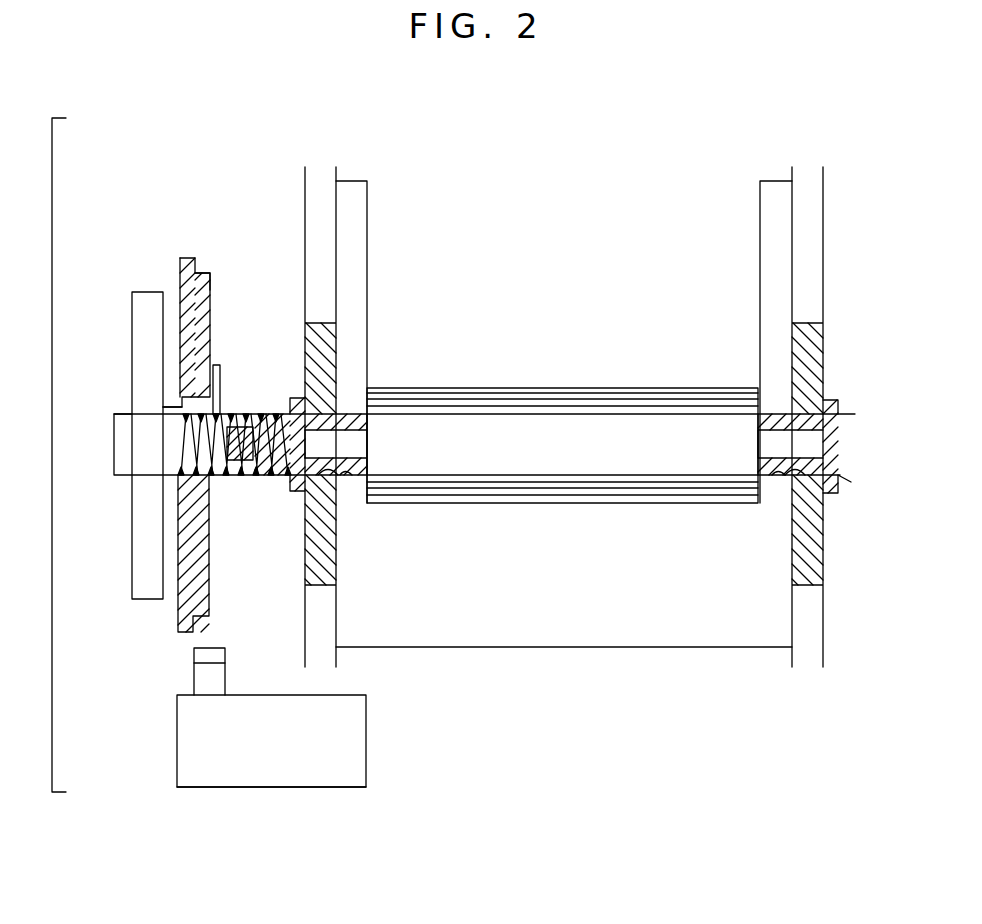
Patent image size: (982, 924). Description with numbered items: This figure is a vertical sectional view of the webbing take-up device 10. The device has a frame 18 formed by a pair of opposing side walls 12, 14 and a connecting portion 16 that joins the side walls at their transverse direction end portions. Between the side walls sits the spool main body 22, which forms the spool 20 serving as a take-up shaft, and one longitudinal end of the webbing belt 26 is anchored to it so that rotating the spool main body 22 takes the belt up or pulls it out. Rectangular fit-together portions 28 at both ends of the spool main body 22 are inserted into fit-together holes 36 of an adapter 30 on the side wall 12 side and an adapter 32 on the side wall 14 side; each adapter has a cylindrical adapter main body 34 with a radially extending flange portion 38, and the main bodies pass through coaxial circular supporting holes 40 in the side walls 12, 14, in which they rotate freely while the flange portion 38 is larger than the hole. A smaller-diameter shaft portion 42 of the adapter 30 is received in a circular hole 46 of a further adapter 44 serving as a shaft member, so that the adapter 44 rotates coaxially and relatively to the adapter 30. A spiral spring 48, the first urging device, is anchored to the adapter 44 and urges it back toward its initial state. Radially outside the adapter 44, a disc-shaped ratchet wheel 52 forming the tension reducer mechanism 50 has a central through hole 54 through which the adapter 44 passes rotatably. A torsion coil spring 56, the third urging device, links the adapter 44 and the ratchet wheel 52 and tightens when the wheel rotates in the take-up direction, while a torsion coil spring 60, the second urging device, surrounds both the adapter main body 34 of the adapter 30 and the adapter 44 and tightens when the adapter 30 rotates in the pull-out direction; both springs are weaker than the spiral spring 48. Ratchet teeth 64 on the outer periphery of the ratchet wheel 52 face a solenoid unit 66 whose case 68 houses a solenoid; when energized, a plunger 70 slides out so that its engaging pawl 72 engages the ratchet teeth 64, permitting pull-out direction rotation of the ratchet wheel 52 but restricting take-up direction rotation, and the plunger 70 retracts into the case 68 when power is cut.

The webbing take-up device 10 is at (234, 172).
The side wall 12 is at (305, 222).
The side wall 14 is at (823, 230).
The connecting portion 16 is at (780, 181).
The frame 18 is at (826, 178).
The spool 20 is at (590, 410).
The spool main body 22 is at (635, 405).
The webbing belt 26 is at (760, 283).
The fit-together portion 28 is at (357, 428).
The adapter 30 is at (347, 411).
The adapter 32 is at (780, 411).
The adapter main body 34 is at (345, 478).
The fit-together hole 36 is at (360, 453).
The flange portion 38 is at (292, 398).
The supporting hole 40 is at (340, 477).
The shaft portion 42 is at (258, 413).
The adapter 44 is at (217, 413).
The circular hole 46 is at (249, 478).
The spiral spring 48 is at (132, 300).
The tension reducer mechanism 50 is at (156, 267).
The ratchet wheel 52 is at (188, 255).
The through hole 54 is at (165, 407).
The torsion coil spring 56 is at (200, 490).
The torsion coil spring 60 is at (265, 467).
The ratchet teeth 64 is at (208, 273).
The solenoid unit 66 is at (372, 757).
The case 68 is at (367, 775).
The plunger 70 is at (194, 685).
The engaging pawl 72 is at (194, 660).